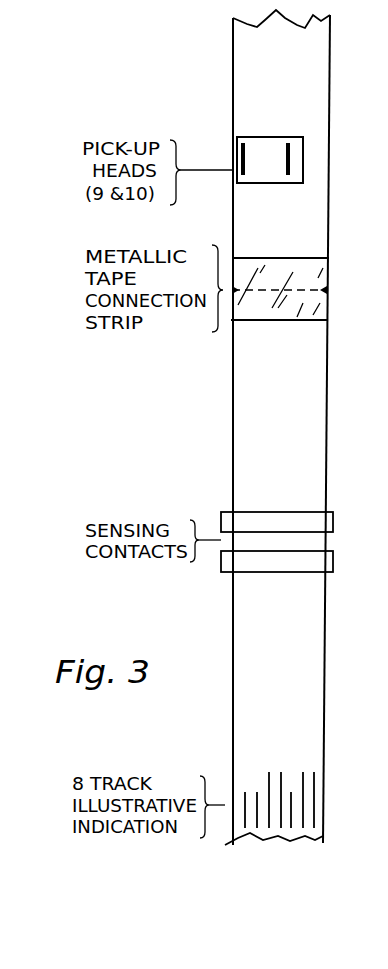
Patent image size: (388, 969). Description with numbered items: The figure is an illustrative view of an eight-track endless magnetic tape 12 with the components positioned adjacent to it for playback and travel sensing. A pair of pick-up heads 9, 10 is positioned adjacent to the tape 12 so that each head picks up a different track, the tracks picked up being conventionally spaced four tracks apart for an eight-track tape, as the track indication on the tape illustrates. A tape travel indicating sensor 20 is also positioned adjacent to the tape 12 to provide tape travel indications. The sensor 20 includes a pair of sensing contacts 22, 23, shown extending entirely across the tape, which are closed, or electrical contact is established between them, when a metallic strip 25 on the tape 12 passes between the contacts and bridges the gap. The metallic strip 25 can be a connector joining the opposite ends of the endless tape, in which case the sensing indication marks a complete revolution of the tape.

The multitrack endless tape 12 is at (310, 59).
The pick-up head 9 is at (272, 152).
The pick-up head 10 is at (293, 150).
The metallic strip 25 is at (323, 275).
The sensing contact 22 is at (333, 520).
The sensing contact 23 is at (333, 563).
The tape travel indicating sensor 20 is at (215, 587).